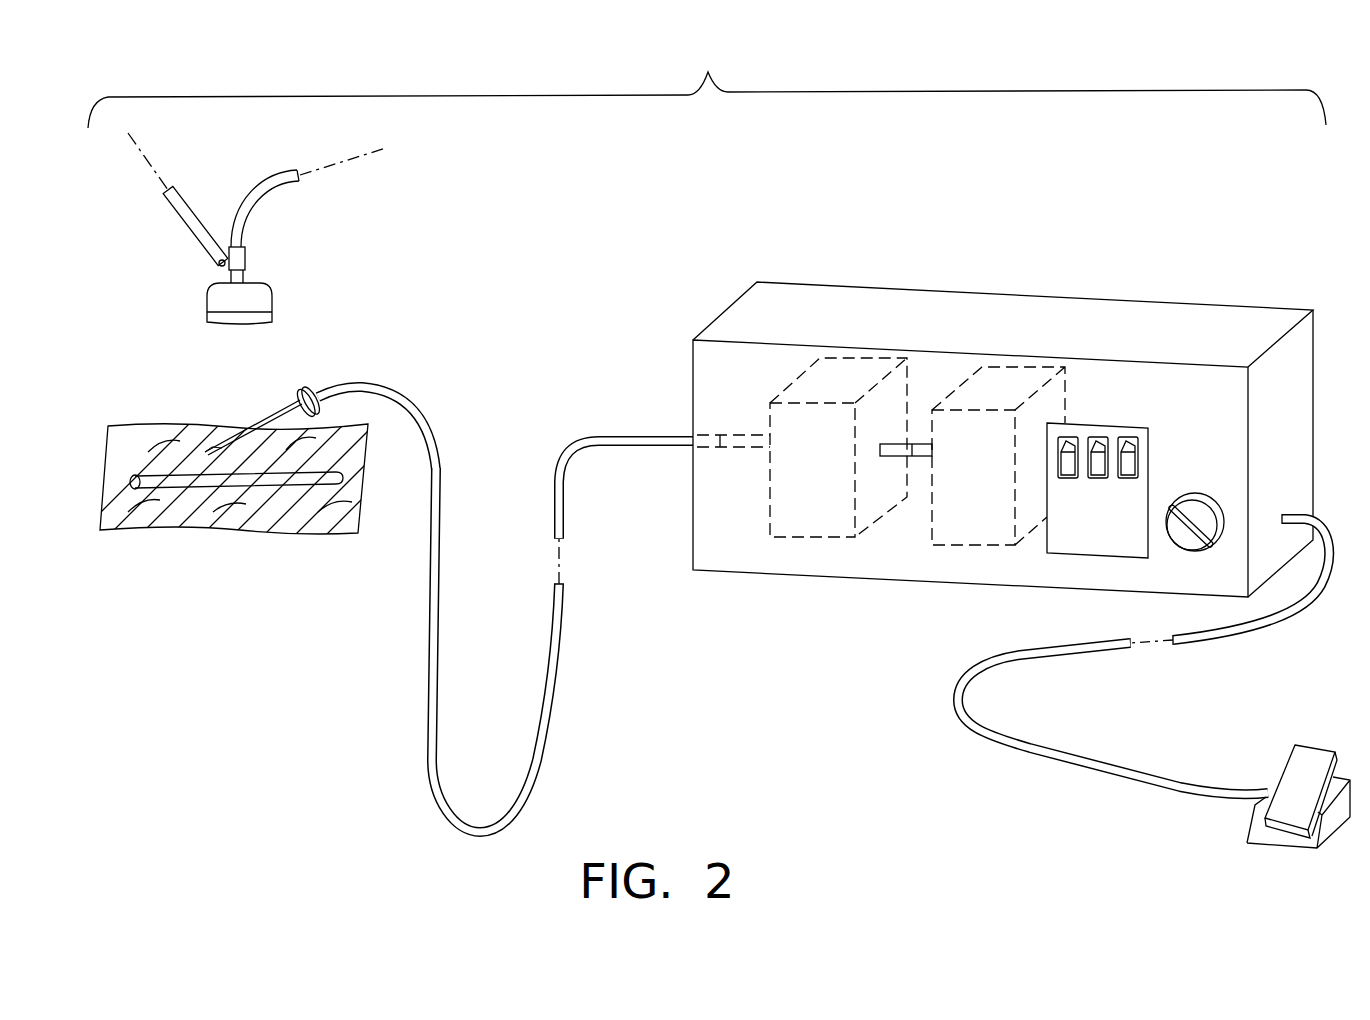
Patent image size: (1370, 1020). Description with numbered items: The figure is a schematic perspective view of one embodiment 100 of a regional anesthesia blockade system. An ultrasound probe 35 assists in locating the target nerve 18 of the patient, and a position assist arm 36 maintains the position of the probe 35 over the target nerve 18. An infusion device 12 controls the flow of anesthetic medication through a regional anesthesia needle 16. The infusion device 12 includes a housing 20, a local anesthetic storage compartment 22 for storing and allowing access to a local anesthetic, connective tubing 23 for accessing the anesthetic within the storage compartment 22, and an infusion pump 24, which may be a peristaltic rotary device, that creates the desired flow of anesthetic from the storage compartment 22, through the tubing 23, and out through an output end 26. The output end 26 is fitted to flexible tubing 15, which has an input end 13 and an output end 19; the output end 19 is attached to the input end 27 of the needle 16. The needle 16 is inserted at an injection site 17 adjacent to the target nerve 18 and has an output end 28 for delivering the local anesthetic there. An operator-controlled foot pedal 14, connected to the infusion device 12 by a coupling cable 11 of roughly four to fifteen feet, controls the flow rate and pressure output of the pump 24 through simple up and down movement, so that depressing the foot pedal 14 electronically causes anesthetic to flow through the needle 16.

The embodiment of the system 100 is at (708, 70).
The infusion device 12 is at (915, 246).
The housing 20 is at (1023, 310).
The infusion pump 24 is at (800, 537).
The local anesthetic storage compartment 22 is at (990, 545).
The connective tubing 23 is at (920, 458).
The output end 26 is at (707, 433).
The input end 13 is at (677, 446).
The flexible tubing 15 is at (427, 657).
The output end 19 is at (322, 388).
The input end 27 is at (300, 390).
The regional anesthesia needle 16 is at (281, 406).
The output end 28 is at (208, 445).
The injection site 17 is at (224, 424).
The target nerve 18 is at (160, 484).
The ultrasound probe 35 is at (262, 300).
The position assist arm 36 is at (186, 226).
The coupling cable 11 is at (1330, 593).
The foot pedal 14 is at (1310, 757).